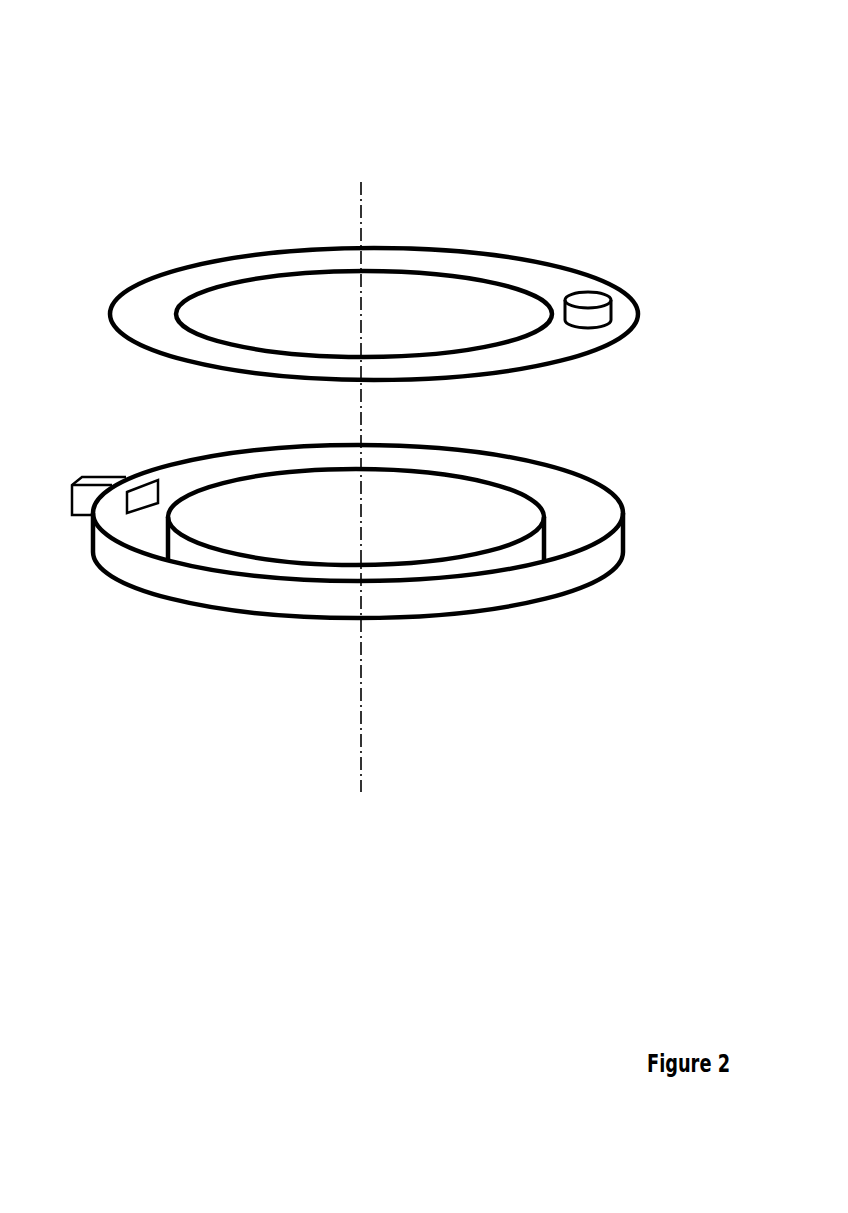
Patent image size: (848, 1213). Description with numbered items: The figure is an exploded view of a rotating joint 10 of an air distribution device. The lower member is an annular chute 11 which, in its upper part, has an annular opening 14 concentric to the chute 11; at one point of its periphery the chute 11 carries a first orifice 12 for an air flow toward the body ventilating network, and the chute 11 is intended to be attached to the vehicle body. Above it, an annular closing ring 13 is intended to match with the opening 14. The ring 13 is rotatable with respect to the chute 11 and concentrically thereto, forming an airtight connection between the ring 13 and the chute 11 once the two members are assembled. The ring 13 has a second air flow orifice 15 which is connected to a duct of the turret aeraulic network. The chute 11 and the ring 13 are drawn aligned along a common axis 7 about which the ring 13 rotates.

The rotating joint 10 is at (193, 83).
The central axis 7 is at (362, 209).
The annular closing ring 13 is at (158, 302).
The second air flow orifice 15 is at (587, 300).
The first orifice 12 is at (145, 493).
The annular opening 14 is at (561, 489).
The annular chute 11 is at (223, 590).